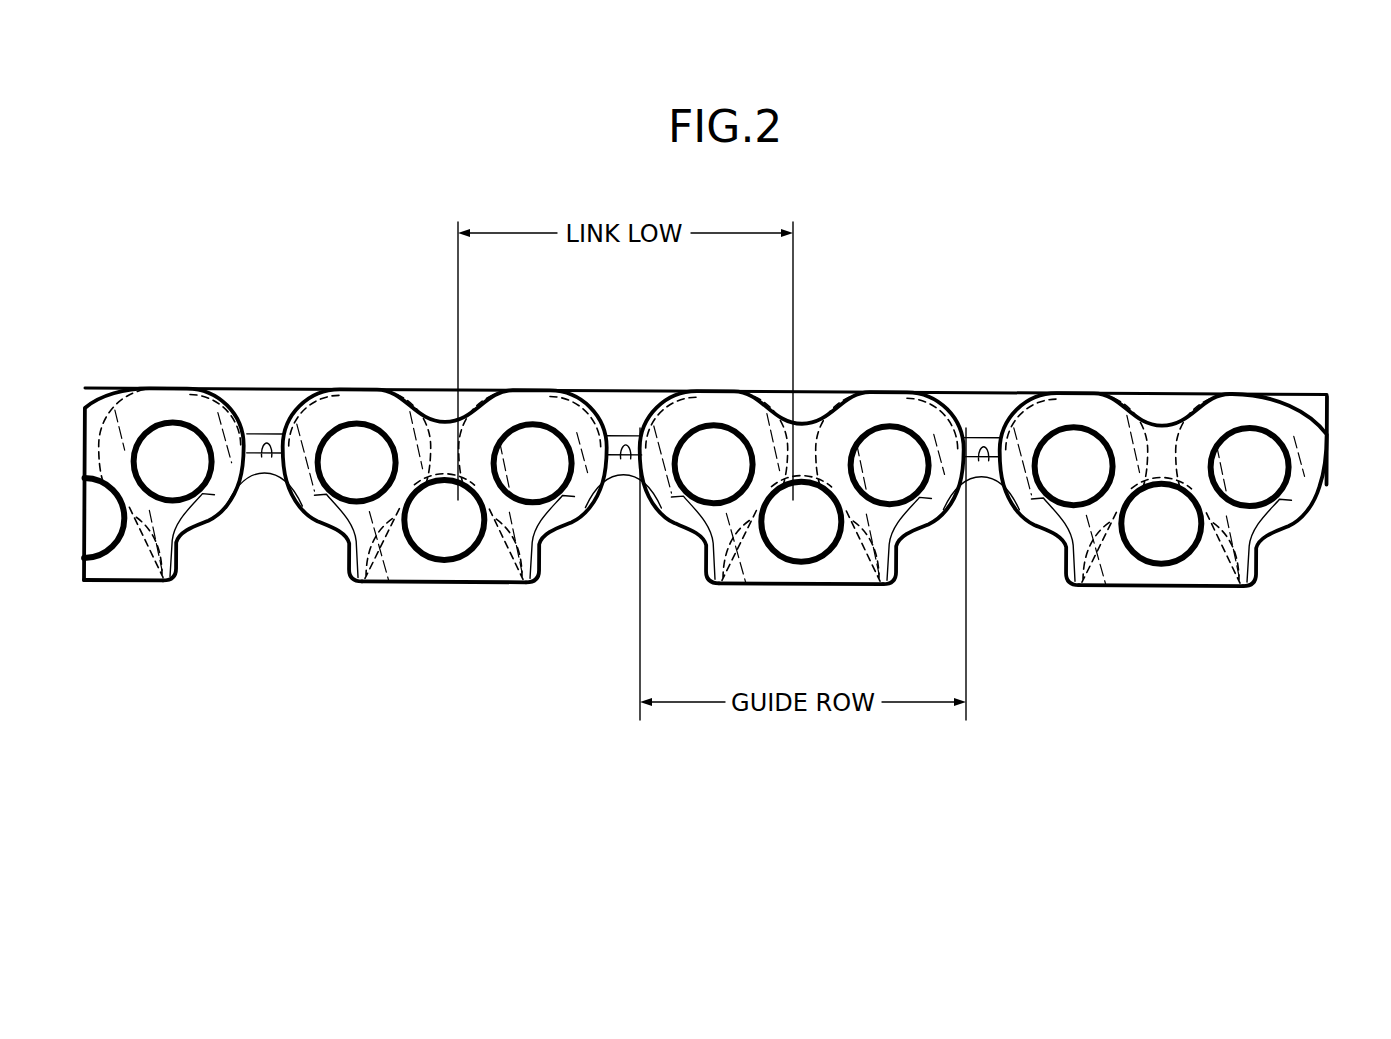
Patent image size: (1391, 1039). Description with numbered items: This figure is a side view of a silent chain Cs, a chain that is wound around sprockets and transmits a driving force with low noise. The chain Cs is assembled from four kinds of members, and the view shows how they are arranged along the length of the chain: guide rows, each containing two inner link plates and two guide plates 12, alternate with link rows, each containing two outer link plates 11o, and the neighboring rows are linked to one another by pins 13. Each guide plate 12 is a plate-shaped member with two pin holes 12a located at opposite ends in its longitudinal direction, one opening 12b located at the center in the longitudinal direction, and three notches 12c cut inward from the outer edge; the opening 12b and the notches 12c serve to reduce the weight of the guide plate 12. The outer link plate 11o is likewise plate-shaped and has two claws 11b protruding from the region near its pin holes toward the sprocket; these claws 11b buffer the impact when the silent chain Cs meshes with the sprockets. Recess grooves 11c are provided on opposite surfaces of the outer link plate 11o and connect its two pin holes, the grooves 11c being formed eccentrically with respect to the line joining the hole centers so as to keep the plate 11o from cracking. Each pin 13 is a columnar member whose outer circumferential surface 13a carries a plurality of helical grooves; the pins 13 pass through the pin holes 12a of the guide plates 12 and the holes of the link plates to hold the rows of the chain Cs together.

The silent chain Cs is at (886, 326).
The outer link plate 11o is at (266, 385).
The claws 11b is at (183, 579).
The recess grooves 11c is at (265, 456).
The guide plate 12 is at (498, 384).
The pin holes 12a is at (328, 439).
The opening 12b is at (456, 557).
The notches 12c is at (445, 418).
The pin 13 is at (183, 416).
The outer circumferential surface 13a is at (205, 494).